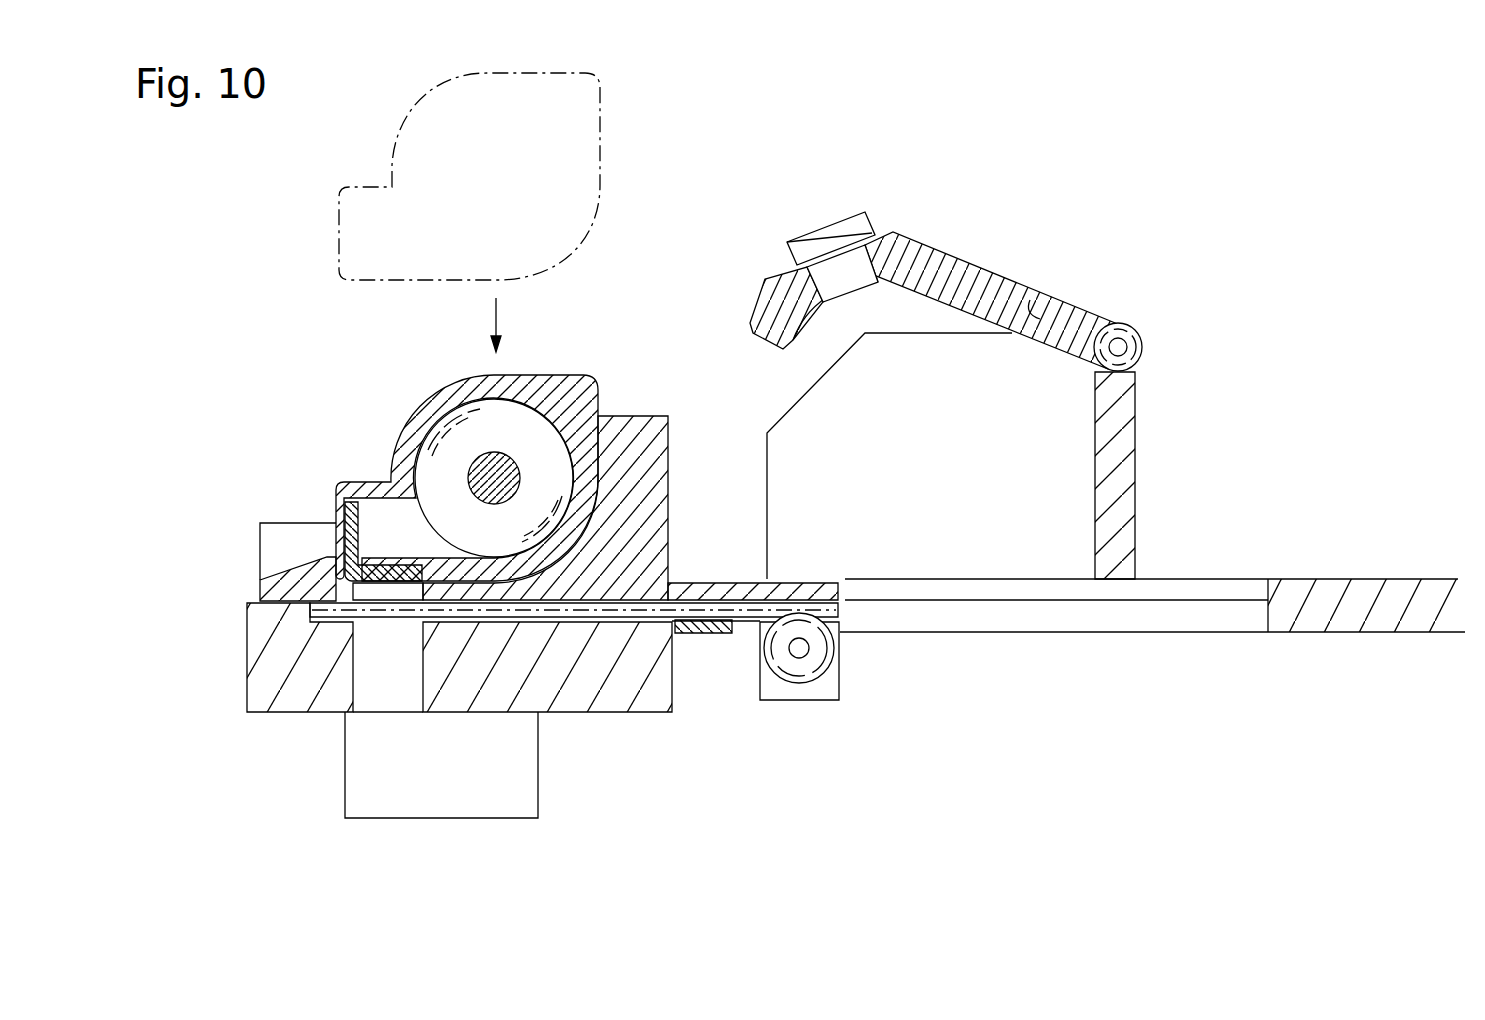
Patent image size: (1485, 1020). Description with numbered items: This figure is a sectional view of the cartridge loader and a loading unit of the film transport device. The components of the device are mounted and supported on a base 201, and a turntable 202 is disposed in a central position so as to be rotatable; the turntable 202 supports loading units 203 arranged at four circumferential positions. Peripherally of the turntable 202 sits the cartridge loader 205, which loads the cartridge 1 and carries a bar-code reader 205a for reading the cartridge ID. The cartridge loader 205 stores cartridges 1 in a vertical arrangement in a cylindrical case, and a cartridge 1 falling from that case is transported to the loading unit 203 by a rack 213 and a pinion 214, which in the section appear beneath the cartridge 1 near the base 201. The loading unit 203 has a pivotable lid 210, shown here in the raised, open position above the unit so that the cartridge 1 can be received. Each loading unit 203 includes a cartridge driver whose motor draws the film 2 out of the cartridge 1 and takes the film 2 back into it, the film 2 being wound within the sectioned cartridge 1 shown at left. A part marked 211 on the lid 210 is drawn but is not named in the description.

The cartridge 1 is at (420, 138).
The film 2 is at (527, 423).
The base 201 is at (285, 700).
The turntable 202 is at (1348, 587).
The loading unit 203 is at (1110, 277).
The cartridge loader 205 is at (652, 418).
The bar-code reader 205a is at (353, 787).
The pivotable lid 210 is at (973, 282).
The engaging portion of arm 211 is at (1035, 317).
The rack 213 is at (627, 612).
The pinion 214 is at (793, 667).